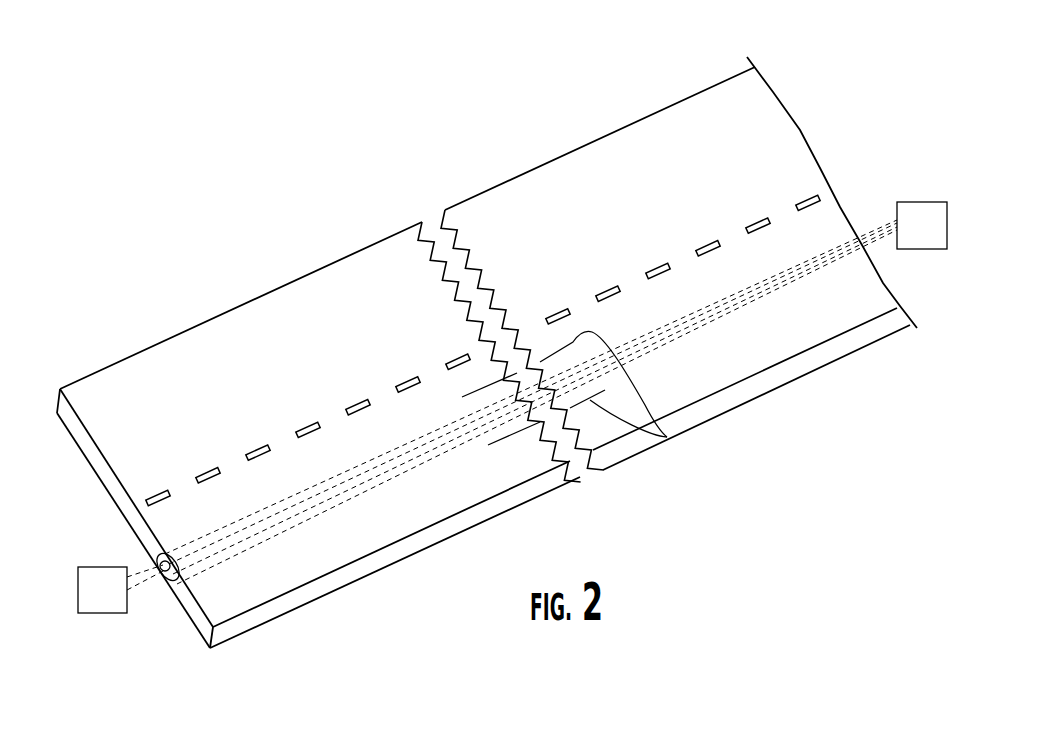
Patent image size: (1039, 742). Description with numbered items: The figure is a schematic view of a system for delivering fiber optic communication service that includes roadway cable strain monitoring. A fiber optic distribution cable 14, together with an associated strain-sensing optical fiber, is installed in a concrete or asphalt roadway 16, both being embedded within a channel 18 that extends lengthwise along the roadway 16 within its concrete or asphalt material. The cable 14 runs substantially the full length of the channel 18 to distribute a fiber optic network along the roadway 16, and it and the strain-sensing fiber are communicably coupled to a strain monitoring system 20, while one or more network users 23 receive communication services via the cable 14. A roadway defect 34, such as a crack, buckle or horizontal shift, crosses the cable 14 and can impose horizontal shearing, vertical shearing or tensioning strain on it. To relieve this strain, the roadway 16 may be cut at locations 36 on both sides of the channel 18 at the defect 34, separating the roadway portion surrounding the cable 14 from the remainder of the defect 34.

The distribution cable 14 is at (157, 576).
The roadway 16 is at (770, 122).
The channel 18 is at (166, 582).
The strain monitoring system 20 is at (897, 204).
The network user 23 is at (76, 603).
The roadway defect 34 is at (420, 204).
The cut locations 36 is at (667, 437).